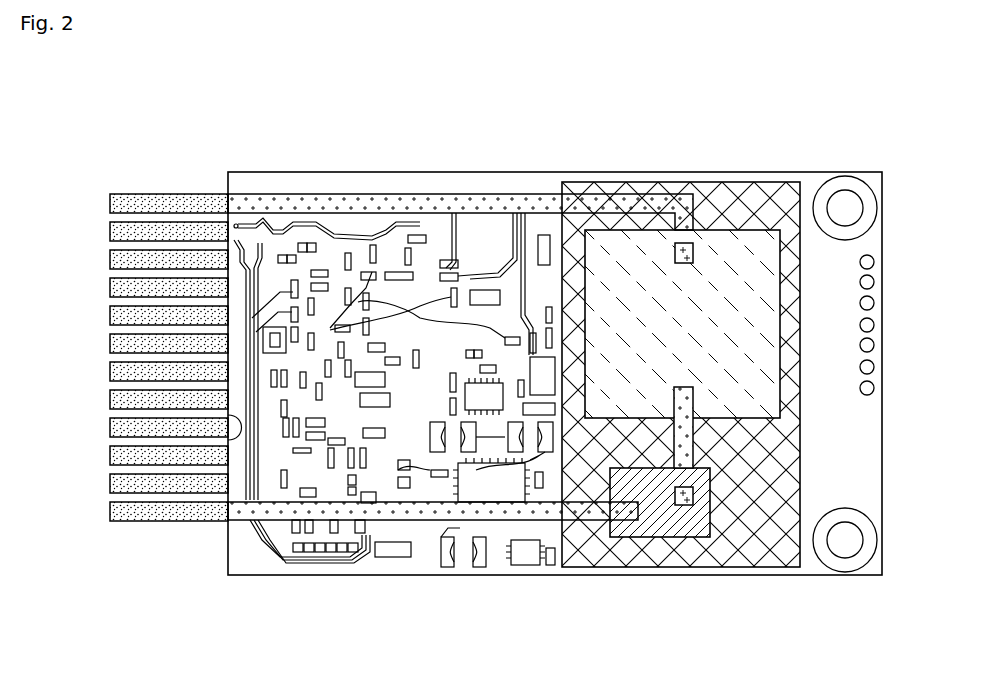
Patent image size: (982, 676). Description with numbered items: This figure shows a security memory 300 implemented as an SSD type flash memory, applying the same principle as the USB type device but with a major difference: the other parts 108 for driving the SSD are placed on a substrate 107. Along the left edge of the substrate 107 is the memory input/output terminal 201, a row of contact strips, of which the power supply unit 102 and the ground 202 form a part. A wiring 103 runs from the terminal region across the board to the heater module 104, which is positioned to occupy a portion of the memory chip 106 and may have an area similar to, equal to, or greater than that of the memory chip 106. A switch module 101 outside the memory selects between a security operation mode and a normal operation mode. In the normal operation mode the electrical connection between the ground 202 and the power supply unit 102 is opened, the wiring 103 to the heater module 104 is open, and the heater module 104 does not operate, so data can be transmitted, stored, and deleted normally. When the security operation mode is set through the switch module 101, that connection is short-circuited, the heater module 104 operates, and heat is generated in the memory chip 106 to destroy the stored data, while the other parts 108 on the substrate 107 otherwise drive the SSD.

The security memory 300 is at (76, 161).
The switch module 101 is at (673, 522).
The power supply unit 102 is at (169, 551).
The wiring 103 is at (400, 203).
The heater module 104 is at (727, 245).
The memory chip 106 is at (778, 196).
The substrate 107 is at (870, 493).
The other parts 108 is at (562, 575).
The memory input/output terminal 201 is at (131, 360).
The ground 202 is at (172, 203).